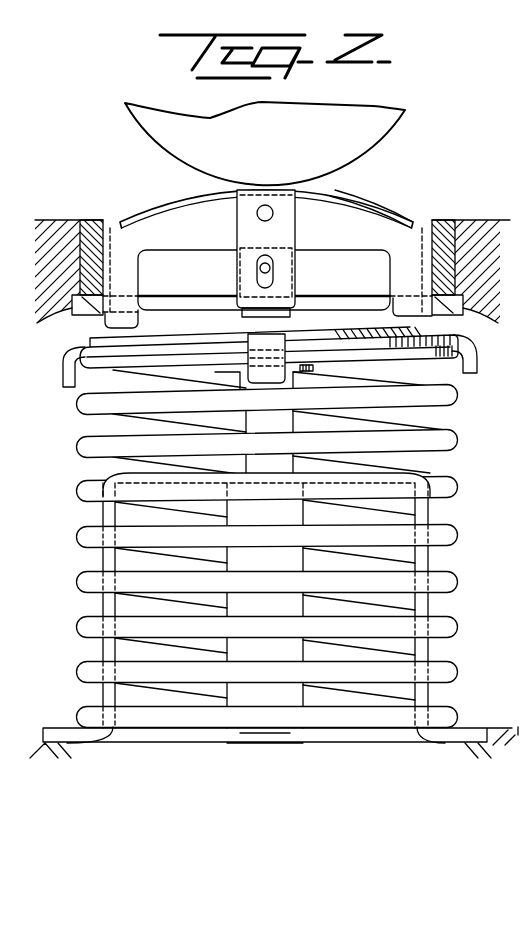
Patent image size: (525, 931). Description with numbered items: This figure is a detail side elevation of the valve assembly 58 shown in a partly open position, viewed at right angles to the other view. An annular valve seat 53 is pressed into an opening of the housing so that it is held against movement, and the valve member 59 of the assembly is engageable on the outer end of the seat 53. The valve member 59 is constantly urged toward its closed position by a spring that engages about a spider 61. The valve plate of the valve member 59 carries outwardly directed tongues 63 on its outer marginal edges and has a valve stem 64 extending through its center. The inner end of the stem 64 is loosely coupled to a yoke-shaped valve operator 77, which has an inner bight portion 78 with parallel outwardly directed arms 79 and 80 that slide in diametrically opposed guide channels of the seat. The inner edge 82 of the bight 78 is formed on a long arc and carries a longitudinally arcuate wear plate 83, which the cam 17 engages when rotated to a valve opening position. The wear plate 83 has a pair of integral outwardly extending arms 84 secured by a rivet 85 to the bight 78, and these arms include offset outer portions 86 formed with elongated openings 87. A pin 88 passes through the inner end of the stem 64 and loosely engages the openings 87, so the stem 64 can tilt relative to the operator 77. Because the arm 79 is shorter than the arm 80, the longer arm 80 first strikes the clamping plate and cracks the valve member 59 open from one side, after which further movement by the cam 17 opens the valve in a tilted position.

The cam 17 is at (157, 126).
The valve seat 53 is at (442, 220).
The valve assembly 58 is at (465, 531).
The valve member 59 is at (413, 343).
The spider 61 is at (437, 608).
The tongues 63 is at (470, 347).
The valve stem 64 is at (278, 425).
The valve operator 77 is at (360, 217).
The bight portion 78 is at (380, 223).
The arm 79 is at (400, 280).
The arm 80 is at (120, 312).
The inner edge 82 is at (343, 200).
The wear plate 83 is at (170, 206).
The arms 84 is at (240, 220).
The rivet 85 is at (274, 217).
The offset outer portions 86 is at (238, 278).
The elongated openings 87 is at (274, 280).
The pin 88 is at (276, 262).